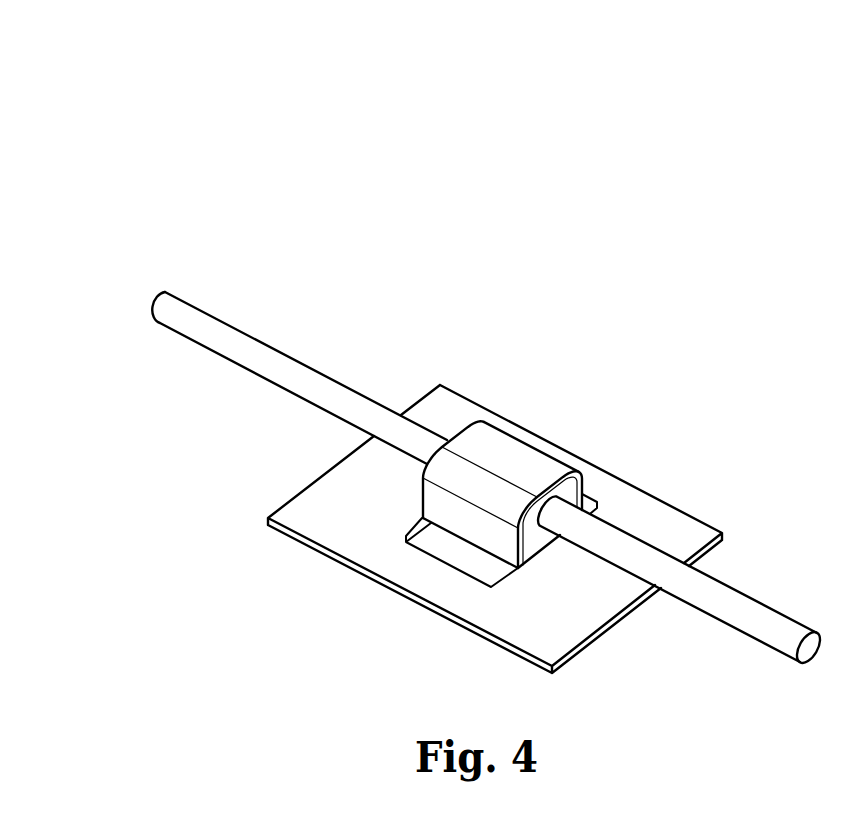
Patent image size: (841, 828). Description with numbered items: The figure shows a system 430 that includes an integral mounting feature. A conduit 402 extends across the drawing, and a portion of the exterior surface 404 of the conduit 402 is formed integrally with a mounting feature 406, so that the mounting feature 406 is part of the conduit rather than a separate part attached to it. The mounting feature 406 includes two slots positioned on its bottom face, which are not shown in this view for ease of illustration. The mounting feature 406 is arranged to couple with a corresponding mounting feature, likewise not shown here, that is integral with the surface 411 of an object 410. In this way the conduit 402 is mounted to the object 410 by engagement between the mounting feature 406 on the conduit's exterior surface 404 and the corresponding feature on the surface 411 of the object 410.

The system 430 is at (215, 117).
The conduit 402 is at (188, 297).
The exterior surface 404 is at (252, 336).
The object 410 is at (464, 394).
The surface 411 is at (508, 432).
The mounting feature 406 is at (541, 451).